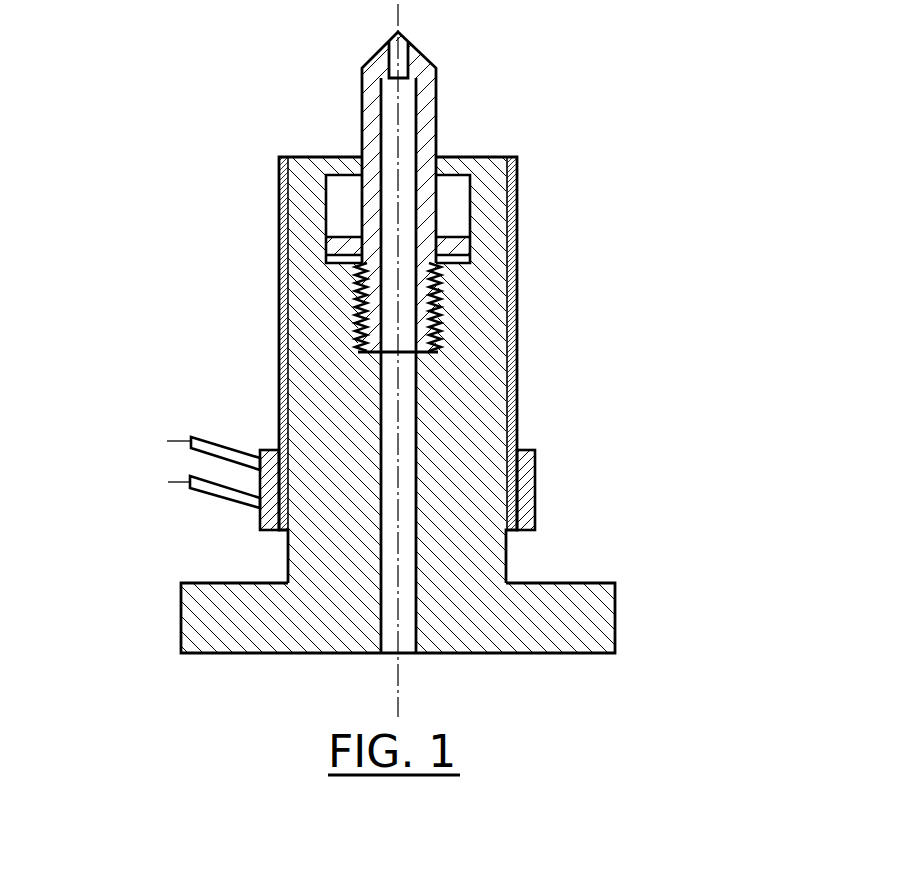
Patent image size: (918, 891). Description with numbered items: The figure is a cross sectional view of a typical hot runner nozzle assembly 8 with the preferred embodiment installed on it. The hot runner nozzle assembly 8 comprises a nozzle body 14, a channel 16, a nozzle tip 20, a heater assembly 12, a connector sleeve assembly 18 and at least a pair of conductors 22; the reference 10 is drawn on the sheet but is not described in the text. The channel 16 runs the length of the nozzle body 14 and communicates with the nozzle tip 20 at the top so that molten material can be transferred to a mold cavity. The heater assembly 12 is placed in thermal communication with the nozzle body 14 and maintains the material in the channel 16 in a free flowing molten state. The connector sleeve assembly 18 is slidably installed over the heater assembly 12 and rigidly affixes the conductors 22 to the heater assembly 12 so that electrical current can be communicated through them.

The hot runner nozzle assembly 8 is at (638, 158).
The housing 10 is at (208, 285).
The heater assembly 12 is at (516, 348).
The nozzle body 14 is at (562, 580).
The channel 16 is at (405, 655).
The connector sleeve assembly 18 is at (535, 500).
The nozzle tip 20 is at (438, 100).
The conductors 22 is at (203, 495).